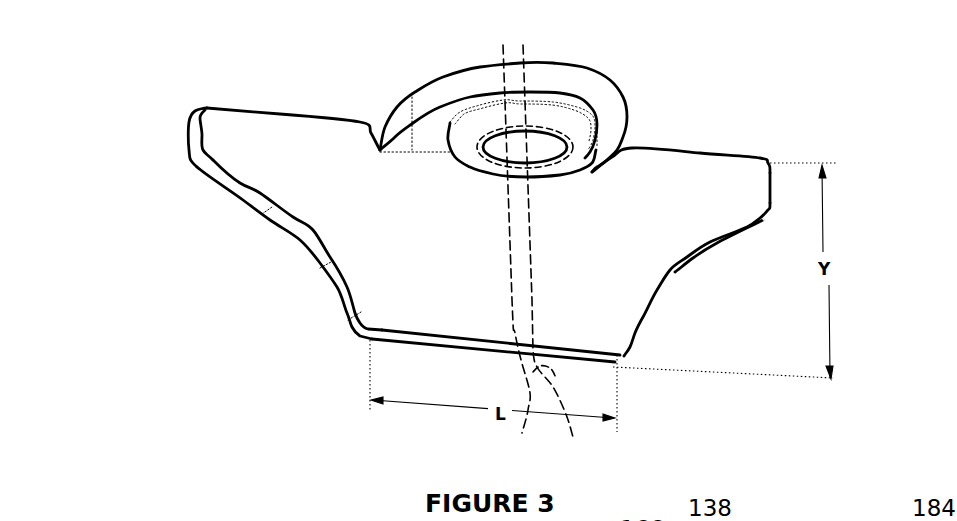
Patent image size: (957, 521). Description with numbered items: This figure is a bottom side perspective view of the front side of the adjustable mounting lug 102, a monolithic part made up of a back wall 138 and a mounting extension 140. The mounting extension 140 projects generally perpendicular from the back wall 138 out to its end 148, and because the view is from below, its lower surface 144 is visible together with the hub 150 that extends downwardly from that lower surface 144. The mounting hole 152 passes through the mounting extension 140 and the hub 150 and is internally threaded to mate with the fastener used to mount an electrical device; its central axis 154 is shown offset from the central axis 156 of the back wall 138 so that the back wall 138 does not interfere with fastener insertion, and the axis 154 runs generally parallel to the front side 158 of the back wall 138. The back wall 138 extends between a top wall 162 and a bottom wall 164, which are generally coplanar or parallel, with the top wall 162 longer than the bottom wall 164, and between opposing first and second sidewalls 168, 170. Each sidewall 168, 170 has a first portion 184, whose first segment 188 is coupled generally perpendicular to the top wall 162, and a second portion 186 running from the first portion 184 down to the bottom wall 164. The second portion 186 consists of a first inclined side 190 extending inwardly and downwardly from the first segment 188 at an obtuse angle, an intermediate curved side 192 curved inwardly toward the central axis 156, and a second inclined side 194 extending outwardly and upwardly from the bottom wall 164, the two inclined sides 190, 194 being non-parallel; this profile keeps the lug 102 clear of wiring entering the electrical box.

The adjustable mounting lug 102 is at (230, 303).
The back wall 138 is at (600, 312).
The mounting extension 140 is at (587, 80).
The lower surface 144 is at (423, 137).
The end of the mounting extension 148 is at (540, 78).
The hub 150 is at (580, 147).
The mounting hole 152 is at (503, 190).
The central axis of the mounting hole 154 is at (556, 258).
The central axis of the back wall 156 is at (522, 435).
The front side 158 is at (723, 170).
The top wall 162 is at (228, 107).
The bottom wall 164 is at (390, 337).
The first sidewall 168 is at (187, 133).
The second sidewall 170 is at (777, 176).
The first portion 184 is at (170, 109).
The second portion 186 is at (200, 257).
The first segment 188 is at (188, 147).
The first inclined side 190 is at (230, 180).
The intermediate curved side 192 is at (303, 245).
The second inclined side 194 is at (342, 303).